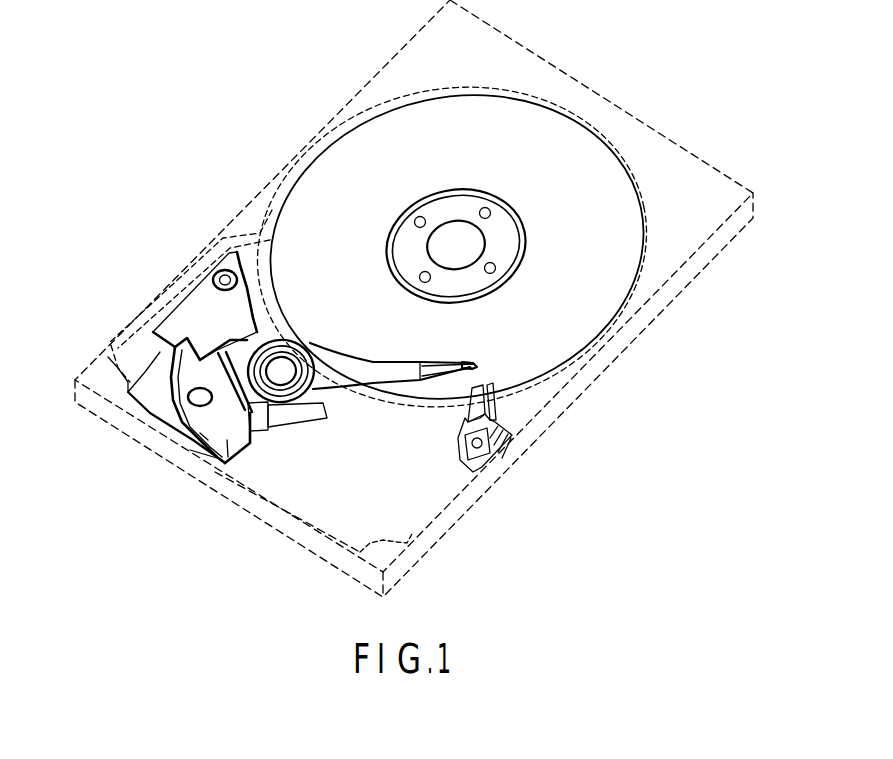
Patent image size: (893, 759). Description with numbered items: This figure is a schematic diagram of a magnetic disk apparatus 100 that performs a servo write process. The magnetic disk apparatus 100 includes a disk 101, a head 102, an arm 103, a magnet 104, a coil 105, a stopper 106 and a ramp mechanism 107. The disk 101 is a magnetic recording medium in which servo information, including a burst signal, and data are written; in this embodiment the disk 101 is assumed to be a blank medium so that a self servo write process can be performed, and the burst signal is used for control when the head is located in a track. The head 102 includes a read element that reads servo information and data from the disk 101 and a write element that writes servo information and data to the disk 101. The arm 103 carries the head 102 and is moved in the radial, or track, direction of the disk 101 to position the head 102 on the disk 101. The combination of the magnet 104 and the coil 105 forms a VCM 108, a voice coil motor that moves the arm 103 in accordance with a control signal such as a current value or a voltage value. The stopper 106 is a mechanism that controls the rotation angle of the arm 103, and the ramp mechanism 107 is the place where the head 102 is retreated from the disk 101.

The magnetic disk apparatus 100 is at (652, 64).
The disk 101 is at (350, 175).
The head 102 is at (478, 365).
The arm 103 is at (323, 378).
The magnet 104 is at (200, 307).
The coil 105 is at (185, 365).
The stopper 106 is at (193, 445).
The ramp mechanism 107 is at (500, 440).
The VCM (Voice Coil Motor) 108 is at (180, 209).